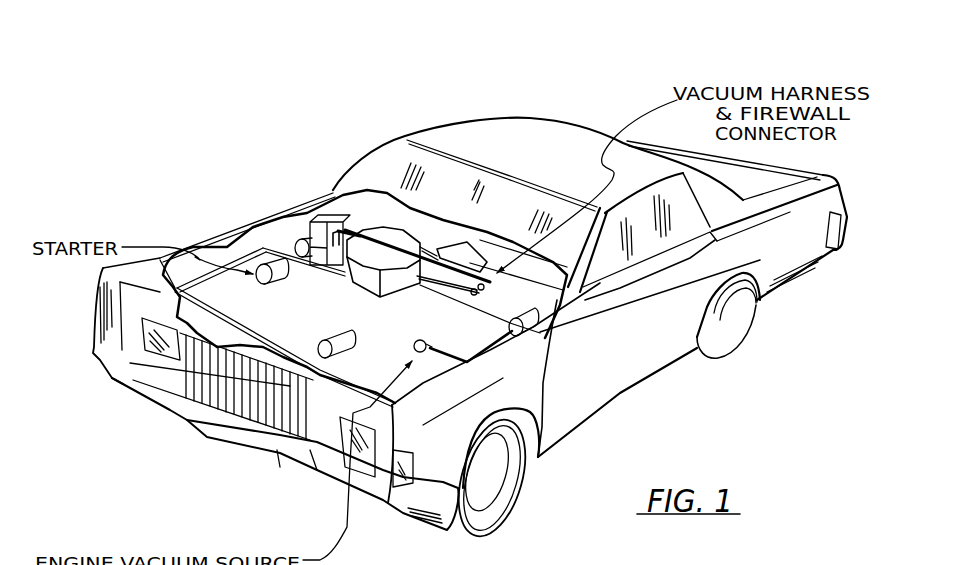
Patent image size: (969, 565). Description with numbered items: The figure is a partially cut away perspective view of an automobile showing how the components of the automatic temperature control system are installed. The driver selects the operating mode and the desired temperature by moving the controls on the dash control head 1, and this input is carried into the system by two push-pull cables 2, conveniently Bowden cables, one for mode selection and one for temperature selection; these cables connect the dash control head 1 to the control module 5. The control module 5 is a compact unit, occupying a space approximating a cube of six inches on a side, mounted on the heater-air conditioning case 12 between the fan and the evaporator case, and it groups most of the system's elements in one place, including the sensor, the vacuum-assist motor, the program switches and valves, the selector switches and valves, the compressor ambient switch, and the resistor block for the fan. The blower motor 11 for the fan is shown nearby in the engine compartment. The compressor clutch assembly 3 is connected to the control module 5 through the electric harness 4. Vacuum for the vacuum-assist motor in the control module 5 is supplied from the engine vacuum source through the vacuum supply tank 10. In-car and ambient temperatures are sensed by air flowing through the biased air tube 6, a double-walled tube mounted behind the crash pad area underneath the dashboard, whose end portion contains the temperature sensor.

The dash control head 1 is at (471, 247).
The push-pull cables 2 is at (421, 234).
The compressor clutch assembly 3 is at (313, 357).
The electric harness 4 is at (222, 312).
The control module 5 is at (313, 241).
The biased air tube 6 is at (353, 216).
The vacuum supply tank 10 is at (528, 328).
The blower motor 11 is at (295, 246).
The heater-air conditioning case 12 is at (380, 255).